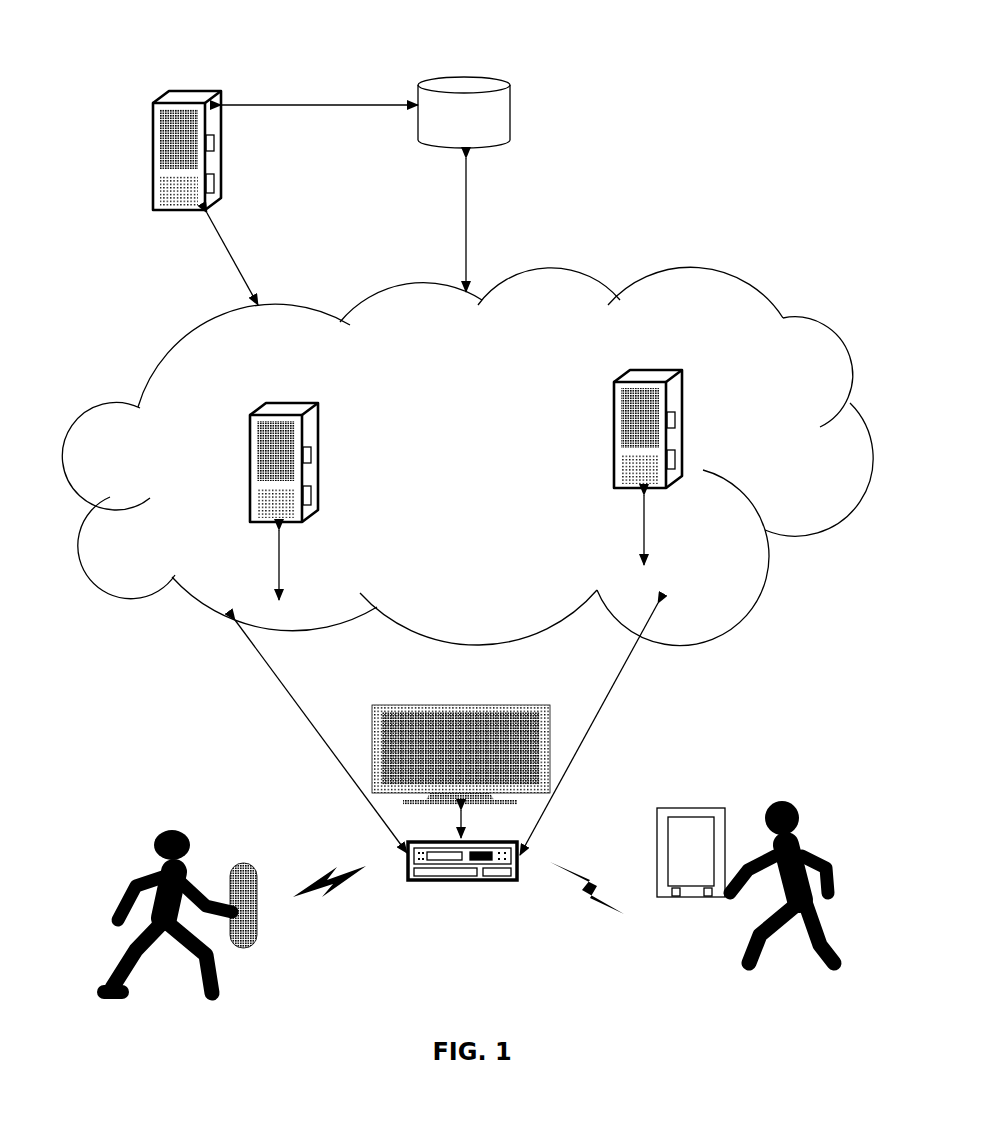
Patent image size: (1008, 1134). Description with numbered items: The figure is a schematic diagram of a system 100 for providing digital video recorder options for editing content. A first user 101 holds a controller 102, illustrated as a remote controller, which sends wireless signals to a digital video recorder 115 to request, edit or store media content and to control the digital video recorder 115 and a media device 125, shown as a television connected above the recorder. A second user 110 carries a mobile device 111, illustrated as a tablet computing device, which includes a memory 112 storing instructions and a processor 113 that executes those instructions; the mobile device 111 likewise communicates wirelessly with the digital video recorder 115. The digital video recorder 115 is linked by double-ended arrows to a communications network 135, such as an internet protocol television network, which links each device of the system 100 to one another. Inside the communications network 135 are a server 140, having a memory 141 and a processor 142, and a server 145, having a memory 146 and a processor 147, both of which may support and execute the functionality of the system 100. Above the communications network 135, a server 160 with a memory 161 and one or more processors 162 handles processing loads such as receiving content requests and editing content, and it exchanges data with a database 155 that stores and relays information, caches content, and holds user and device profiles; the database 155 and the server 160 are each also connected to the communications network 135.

The system 100 is at (255, 63).
The first user 101 is at (124, 1000).
The controller 102 is at (258, 935).
The second user 110 is at (840, 970).
The mobile device 111 is at (722, 808).
The memory 112 is at (675, 900).
The processor 113 is at (707, 900).
The digital video recorder 115 is at (461, 885).
The media device 125 is at (406, 703).
The communications network 135 is at (722, 278).
The server 140 is at (250, 437).
The memory 141 is at (312, 455).
The processor 142 is at (312, 494).
The server 145 is at (614, 405).
The memory 146 is at (680, 420).
The processor 147 is at (680, 459).
The database 155 is at (464, 112).
The server 160 is at (153, 125).
The memory 161 is at (215, 183).
The processors 162 is at (215, 145).